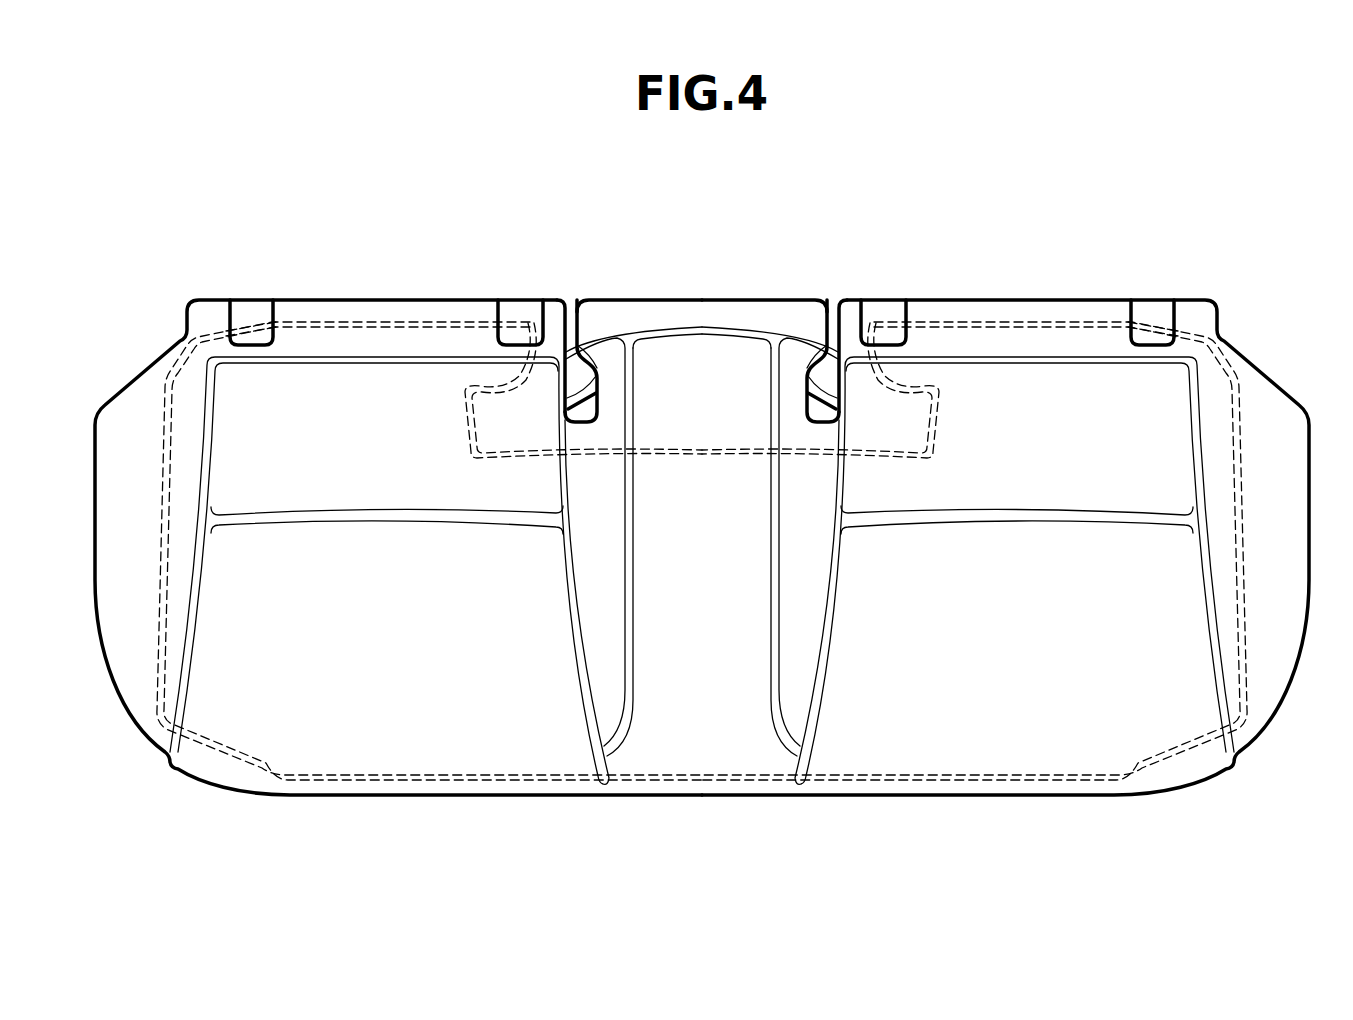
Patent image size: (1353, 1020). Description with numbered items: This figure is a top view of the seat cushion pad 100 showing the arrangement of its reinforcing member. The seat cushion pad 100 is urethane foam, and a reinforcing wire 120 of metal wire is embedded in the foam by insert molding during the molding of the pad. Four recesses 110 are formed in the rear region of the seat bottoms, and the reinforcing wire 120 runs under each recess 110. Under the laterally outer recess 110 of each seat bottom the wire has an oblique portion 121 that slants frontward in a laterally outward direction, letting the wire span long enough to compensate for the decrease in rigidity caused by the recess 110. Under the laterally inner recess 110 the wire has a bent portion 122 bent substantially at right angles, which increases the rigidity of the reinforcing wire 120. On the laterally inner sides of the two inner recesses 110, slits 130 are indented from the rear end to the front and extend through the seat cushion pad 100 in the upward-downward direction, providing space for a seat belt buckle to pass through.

The seat cushion pad 100 is at (750, 795).
The recess 110 is at (258, 308).
The reinforcing wire 120 is at (700, 445).
The oblique portion 121 is at (245, 325).
The bent portion 122 is at (532, 313).
The slit 130 is at (593, 392).